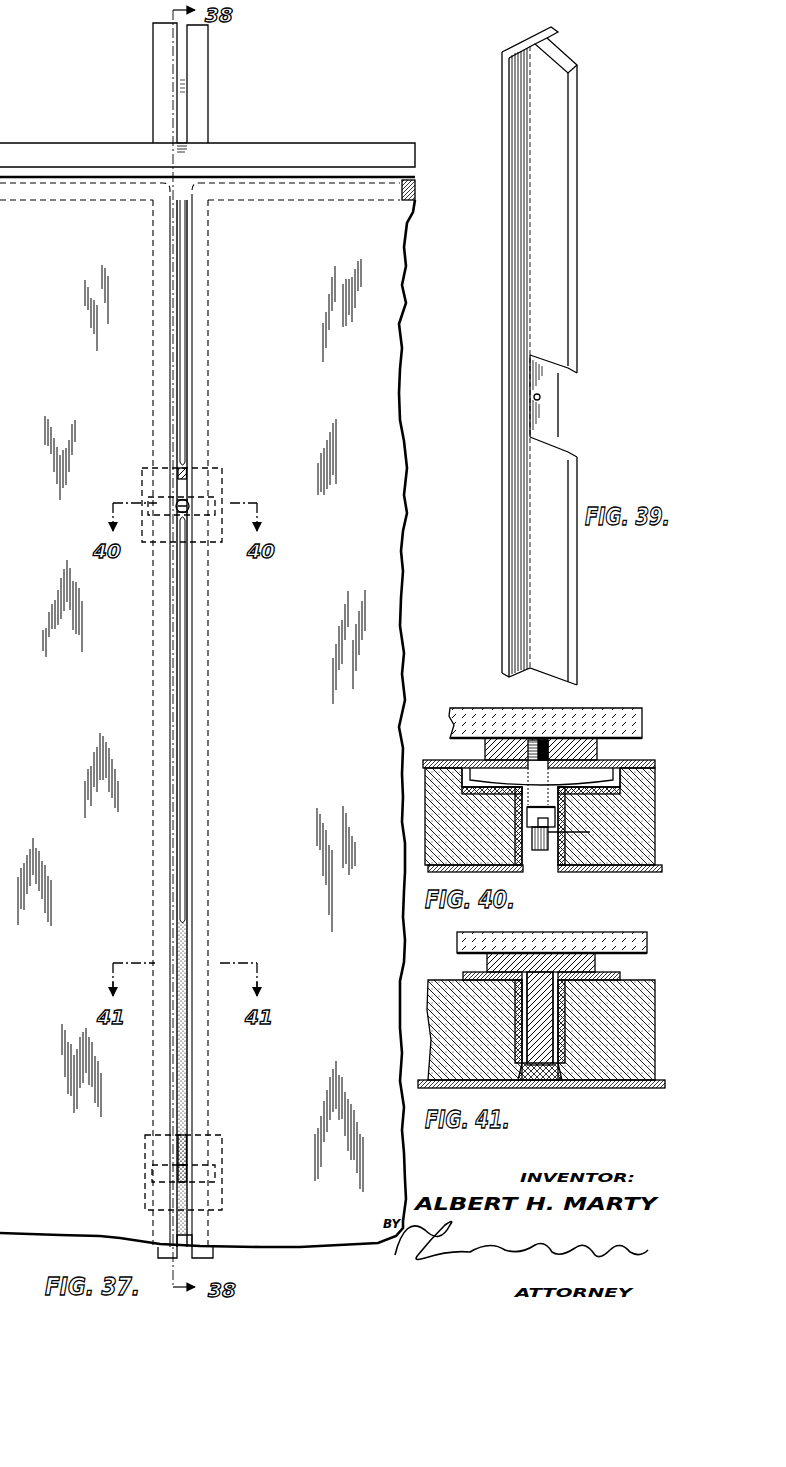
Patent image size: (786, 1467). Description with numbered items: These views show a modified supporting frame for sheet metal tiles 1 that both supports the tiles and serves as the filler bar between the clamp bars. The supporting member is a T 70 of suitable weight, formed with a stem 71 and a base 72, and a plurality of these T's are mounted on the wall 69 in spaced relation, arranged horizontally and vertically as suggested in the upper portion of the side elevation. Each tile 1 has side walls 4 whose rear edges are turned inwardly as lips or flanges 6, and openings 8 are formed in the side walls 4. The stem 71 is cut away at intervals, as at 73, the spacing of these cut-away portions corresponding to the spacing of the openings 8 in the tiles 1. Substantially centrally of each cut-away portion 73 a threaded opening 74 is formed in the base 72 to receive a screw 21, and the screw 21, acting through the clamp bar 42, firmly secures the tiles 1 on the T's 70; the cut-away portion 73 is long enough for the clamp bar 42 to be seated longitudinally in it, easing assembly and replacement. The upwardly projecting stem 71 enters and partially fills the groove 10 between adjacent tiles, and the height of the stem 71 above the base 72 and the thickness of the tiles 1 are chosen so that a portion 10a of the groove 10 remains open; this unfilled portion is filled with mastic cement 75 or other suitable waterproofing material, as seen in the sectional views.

In FIG. 37, the tile 1 is at (403, 666).
In FIG. 40, the tile 1 is at (540, 816).
In FIG. 41, the tile 1 is at (541, 1030).
In FIG. 41, the side wall 4 is at (515, 1027).
In FIG. 40, the lip or flange 6 is at (475, 762).
In FIG. 41, the lip or flange 6 is at (478, 974).
In FIG. 40, the opening 8 is at (565, 790).
In FIG. 37, the groove 10 is at (174, 240).
In FIG. 40, the groove 10 is at (530, 860).
In FIG. 41, the groove 10 is at (565, 1008).
In FIG. 41, the open portion of groove 10a is at (560, 1082).
In FIG. 37, the screw 21 is at (185, 500).
In FIG. 40, the screw 21 is at (527, 815).
In FIG. 37, the clamp bar 42 is at (157, 497).
In FIG. 40, the clamp bar 42 is at (490, 778).
In FIG. 40, the wall 69 is at (600, 725).
In FIG. 41, the wall 69 is at (615, 947).
In FIG. 37, the T 70 is at (211, 60).
In FIG. 39, the T 70 is at (583, 272).
In FIG. 40, the T 70 is at (565, 742).
In FIG. 41, the T 70 is at (565, 960).
In FIG. 37, the stem 71 is at (176, 80).
In FIG. 39, the stem 71 is at (565, 173).
In FIG. 40, the stem 71 is at (545, 850).
In FIG. 41, the stem 71 is at (550, 1045).
In FIG. 37, the base 72 is at (203, 80).
In FIG. 39, the base 72 is at (515, 193).
In FIG. 40, the base 72 is at (505, 738).
In FIG. 41, the base 72 is at (527, 962).
In FIG. 37, the cut away portion 73 is at (185, 470).
In FIG. 39, the cut away portion 73 is at (565, 390).
In FIG. 40, the cut away portion 73 is at (579, 837).
In FIG. 39, the threaded opening 74 is at (534, 397).
In FIG. 40, the threaded opening 74 is at (542, 738).
In FIG. 41, the mastic cement 75 is at (548, 1088).